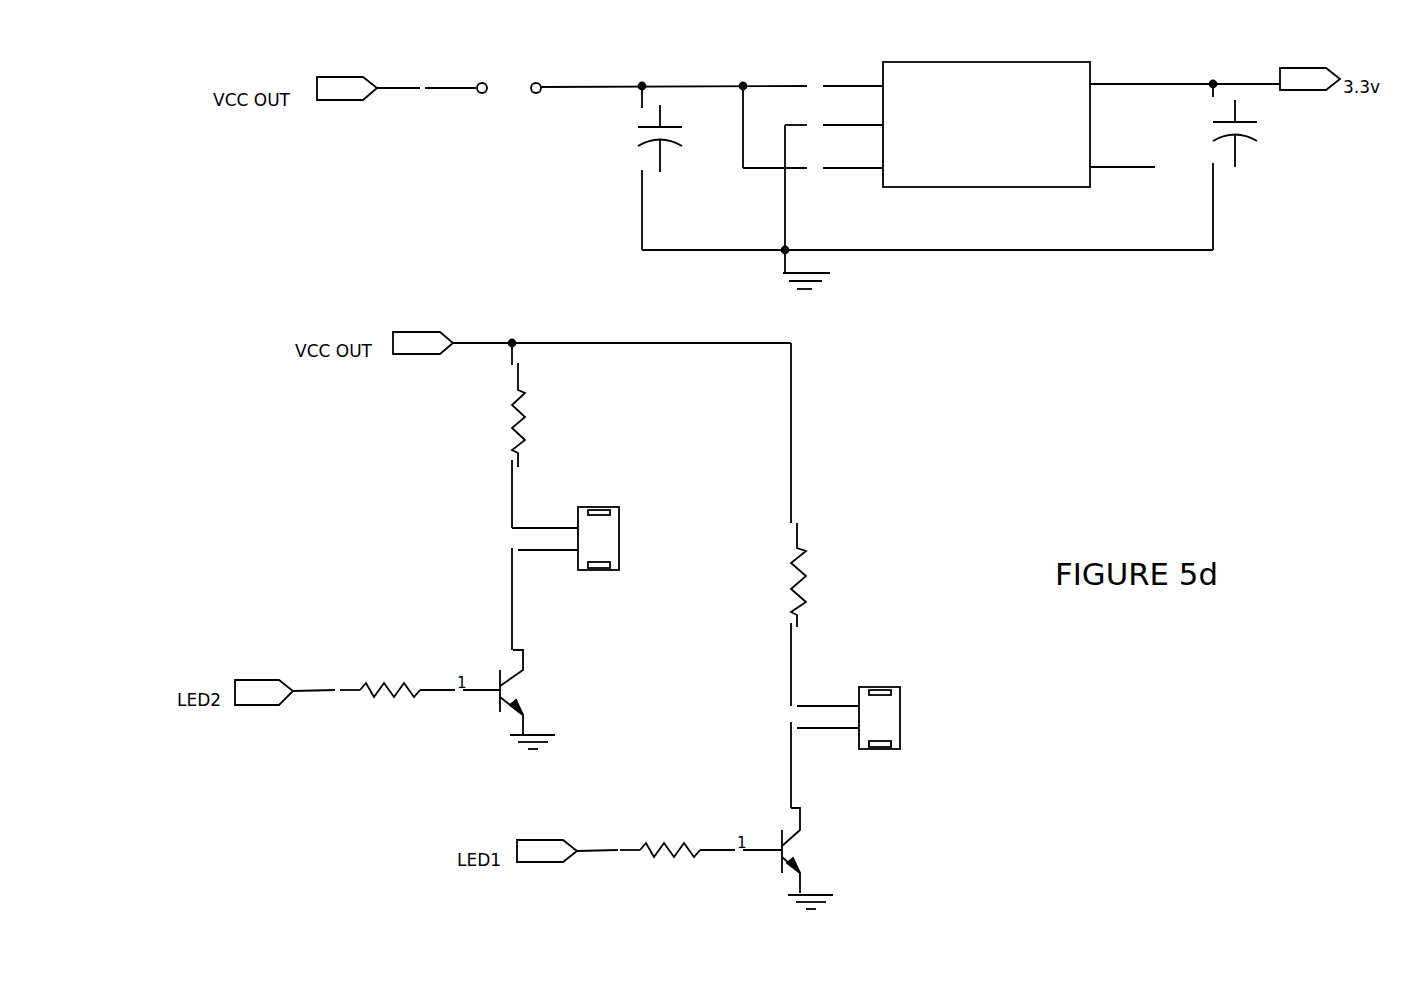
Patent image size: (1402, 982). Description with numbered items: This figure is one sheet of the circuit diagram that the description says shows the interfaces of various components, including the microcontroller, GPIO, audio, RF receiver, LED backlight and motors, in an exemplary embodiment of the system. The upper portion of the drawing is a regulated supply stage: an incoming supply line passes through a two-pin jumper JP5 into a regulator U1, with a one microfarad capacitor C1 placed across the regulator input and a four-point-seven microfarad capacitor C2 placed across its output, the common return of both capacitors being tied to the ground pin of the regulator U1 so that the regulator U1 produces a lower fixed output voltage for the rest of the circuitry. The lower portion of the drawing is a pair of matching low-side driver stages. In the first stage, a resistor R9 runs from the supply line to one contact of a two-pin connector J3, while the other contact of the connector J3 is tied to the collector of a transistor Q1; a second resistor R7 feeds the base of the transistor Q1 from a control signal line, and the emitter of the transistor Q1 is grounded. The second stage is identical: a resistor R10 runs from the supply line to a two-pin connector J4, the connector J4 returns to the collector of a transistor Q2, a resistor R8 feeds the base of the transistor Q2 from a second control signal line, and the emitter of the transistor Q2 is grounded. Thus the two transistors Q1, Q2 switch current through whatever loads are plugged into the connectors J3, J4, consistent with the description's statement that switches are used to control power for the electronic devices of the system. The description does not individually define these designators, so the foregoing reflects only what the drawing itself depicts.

The jumper JP5 is at (507, 69).
The voltage regulator TPS76333DBVT U1 is at (986, 104).
The capacitor 1uF C1 is at (684, 168).
The capacitor 4.7uF C2 is at (1258, 167).
The resistor 1kOhm R7 is at (392, 664).
The resistor 1kOhm R8 is at (672, 823).
The resistor 330 R9 is at (551, 415).
The resistor 330 R10 is at (831, 575).
The transistor MMBTA42L Q1 is at (577, 699).
The transistor MMBTA42L Q2 is at (858, 858).
The connector TYCO 640454-2 J3 is at (636, 547).
The connector TYCO 640454-2 J4 is at (916, 727).